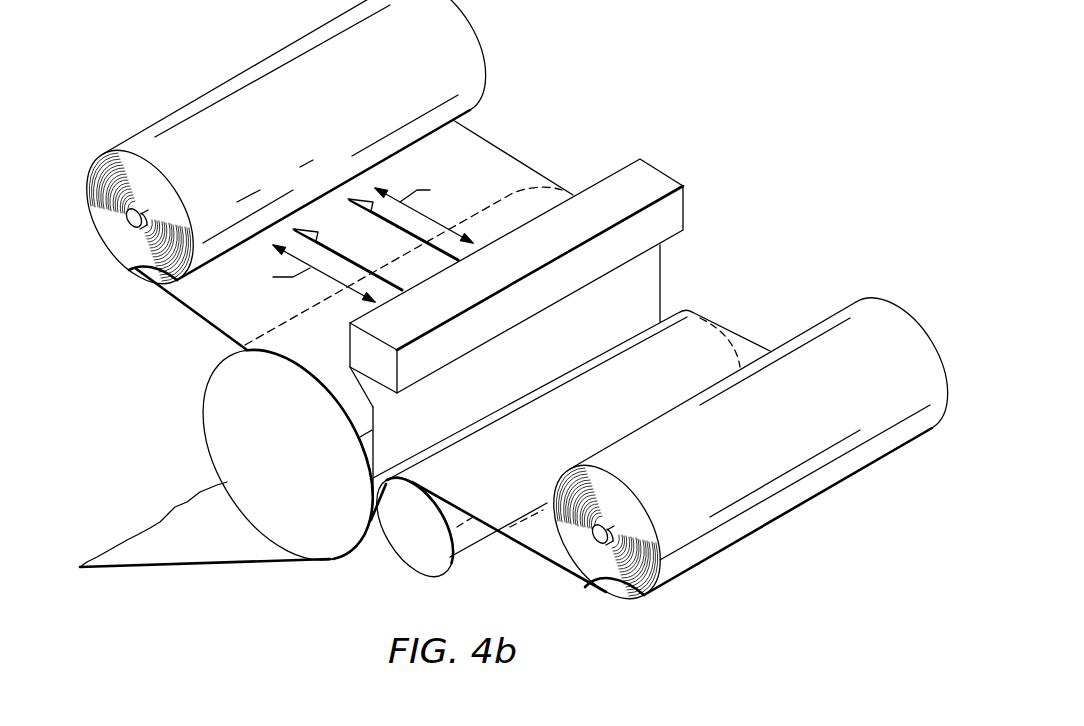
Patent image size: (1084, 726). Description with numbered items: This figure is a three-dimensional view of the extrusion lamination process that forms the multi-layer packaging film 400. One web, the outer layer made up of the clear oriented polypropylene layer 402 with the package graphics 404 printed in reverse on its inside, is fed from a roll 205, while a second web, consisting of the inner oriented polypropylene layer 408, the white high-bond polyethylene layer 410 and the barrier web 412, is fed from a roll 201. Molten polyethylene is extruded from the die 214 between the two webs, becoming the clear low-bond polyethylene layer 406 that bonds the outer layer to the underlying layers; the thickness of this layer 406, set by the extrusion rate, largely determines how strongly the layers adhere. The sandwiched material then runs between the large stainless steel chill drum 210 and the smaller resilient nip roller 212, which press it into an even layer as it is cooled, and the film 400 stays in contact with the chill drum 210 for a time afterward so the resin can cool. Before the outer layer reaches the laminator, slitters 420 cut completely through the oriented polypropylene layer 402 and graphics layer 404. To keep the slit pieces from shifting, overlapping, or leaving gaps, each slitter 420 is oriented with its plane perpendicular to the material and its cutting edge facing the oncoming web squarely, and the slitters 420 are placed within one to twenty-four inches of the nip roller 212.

The roll 201 is at (607, 580).
The roll 205 is at (128, 252).
The chill drum 210 is at (217, 428).
The nip roller 212 is at (422, 562).
The die 214 is at (650, 180).
The multi-layer packaging film 400 is at (182, 550).
The outermost layer of oriented polypropylene 402 is at (404, 204).
The package graphics layer 404 is at (507, 168).
The low-bond polyethylene layer 406 is at (470, 413).
The oriented polypropylene layer 408 is at (763, 322).
The white high-bond polyethylene layer 410 is at (763, 322).
The barrier web 412 is at (743, 350).
The slitters 420 is at (303, 230).